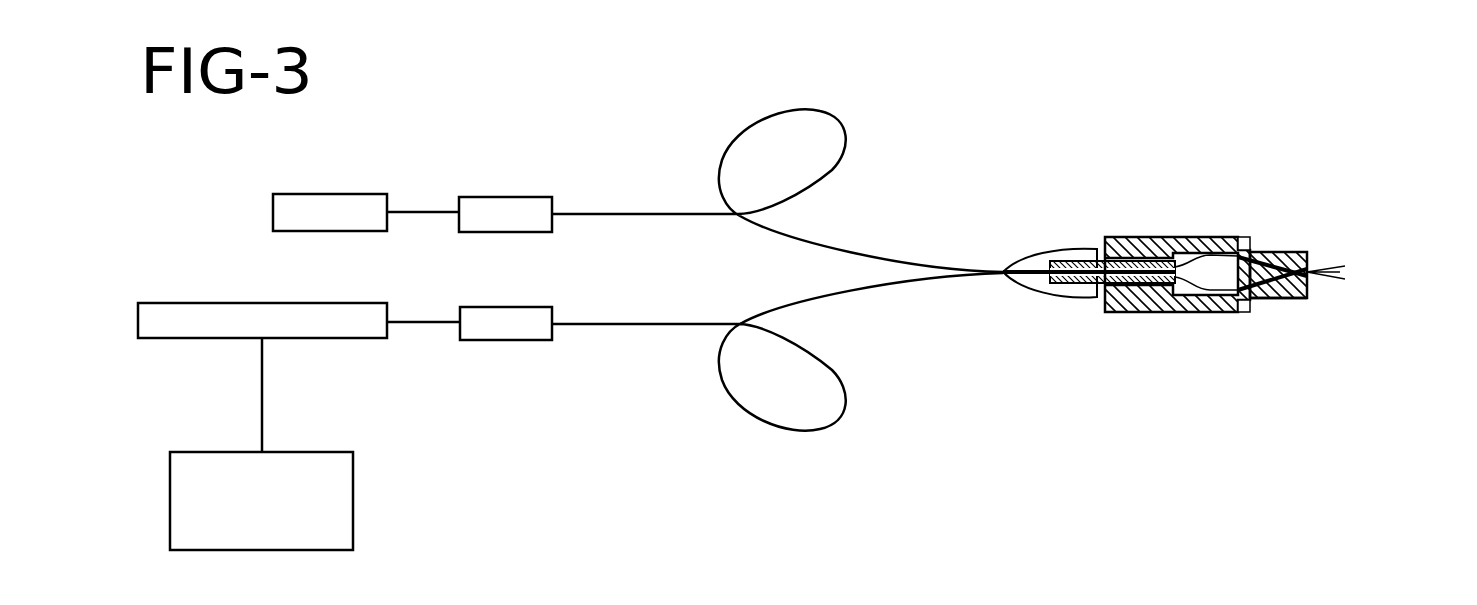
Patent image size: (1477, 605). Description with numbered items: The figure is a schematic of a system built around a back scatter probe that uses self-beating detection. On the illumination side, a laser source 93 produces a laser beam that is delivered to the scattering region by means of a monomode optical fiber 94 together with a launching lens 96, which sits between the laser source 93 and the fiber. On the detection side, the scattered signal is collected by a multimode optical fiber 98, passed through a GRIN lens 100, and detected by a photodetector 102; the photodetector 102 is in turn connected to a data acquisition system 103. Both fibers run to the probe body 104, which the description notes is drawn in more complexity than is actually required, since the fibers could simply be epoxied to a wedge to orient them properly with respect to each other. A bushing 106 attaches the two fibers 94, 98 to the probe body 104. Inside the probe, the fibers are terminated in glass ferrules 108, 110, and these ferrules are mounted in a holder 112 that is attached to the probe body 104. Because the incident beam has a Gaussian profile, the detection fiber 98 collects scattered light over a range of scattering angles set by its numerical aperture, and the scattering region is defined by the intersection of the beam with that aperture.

The laser source 93 is at (320, 194).
The launching lens 96 is at (503, 197).
The monomode optical fiber 94 is at (617, 214).
The multimode optical fiber 98 is at (665, 325).
The GRIN lens 100 is at (537, 307).
The photodetector 102 is at (228, 303).
The data acquisition system 103 is at (353, 477).
The probe body 104 is at (1180, 237).
The bushing 106 is at (1052, 298).
The glass ferrule 108 is at (1292, 252).
The glass ferrule 110 is at (1290, 298).
The holder 112 is at (1277, 250).